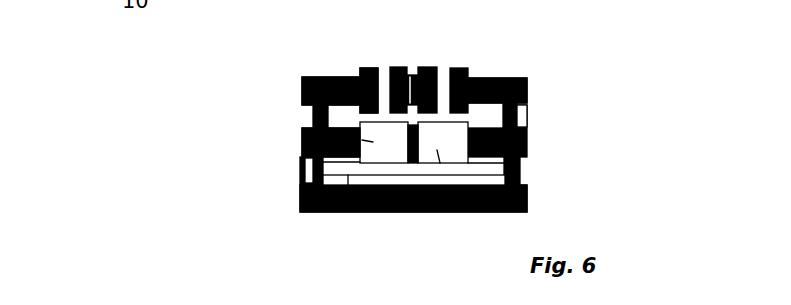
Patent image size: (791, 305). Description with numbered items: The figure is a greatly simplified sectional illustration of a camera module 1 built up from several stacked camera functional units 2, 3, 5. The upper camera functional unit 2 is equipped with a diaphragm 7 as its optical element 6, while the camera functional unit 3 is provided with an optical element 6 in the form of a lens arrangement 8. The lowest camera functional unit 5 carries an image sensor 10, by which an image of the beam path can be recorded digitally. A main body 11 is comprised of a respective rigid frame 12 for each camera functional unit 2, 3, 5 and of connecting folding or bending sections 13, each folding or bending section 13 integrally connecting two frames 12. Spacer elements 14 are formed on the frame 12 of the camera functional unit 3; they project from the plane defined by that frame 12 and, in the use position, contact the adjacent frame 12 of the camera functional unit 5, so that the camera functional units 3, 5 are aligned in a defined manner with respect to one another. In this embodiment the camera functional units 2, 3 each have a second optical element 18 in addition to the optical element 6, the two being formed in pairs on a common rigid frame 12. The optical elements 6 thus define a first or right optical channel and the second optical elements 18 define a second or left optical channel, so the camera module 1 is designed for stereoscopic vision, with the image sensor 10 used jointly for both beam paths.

The camera module 1 is at (214, 147).
The camera functional unit 2 is at (567, 88).
The camera functional unit 3 is at (567, 140).
The camera functional unit 5 is at (567, 197).
The optical element 6 is at (348, 61).
The diaphragm 7 is at (372, 62).
The lens arrangement 8 is at (303, 145).
The image sensor 10 is at (347, 213).
The main body 11 is at (382, 212).
The frame 12 is at (493, 77).
The folding or bending section 13 is at (528, 117).
The spacer element 14 is at (303, 104).
The second optical element 18 is at (448, 53).